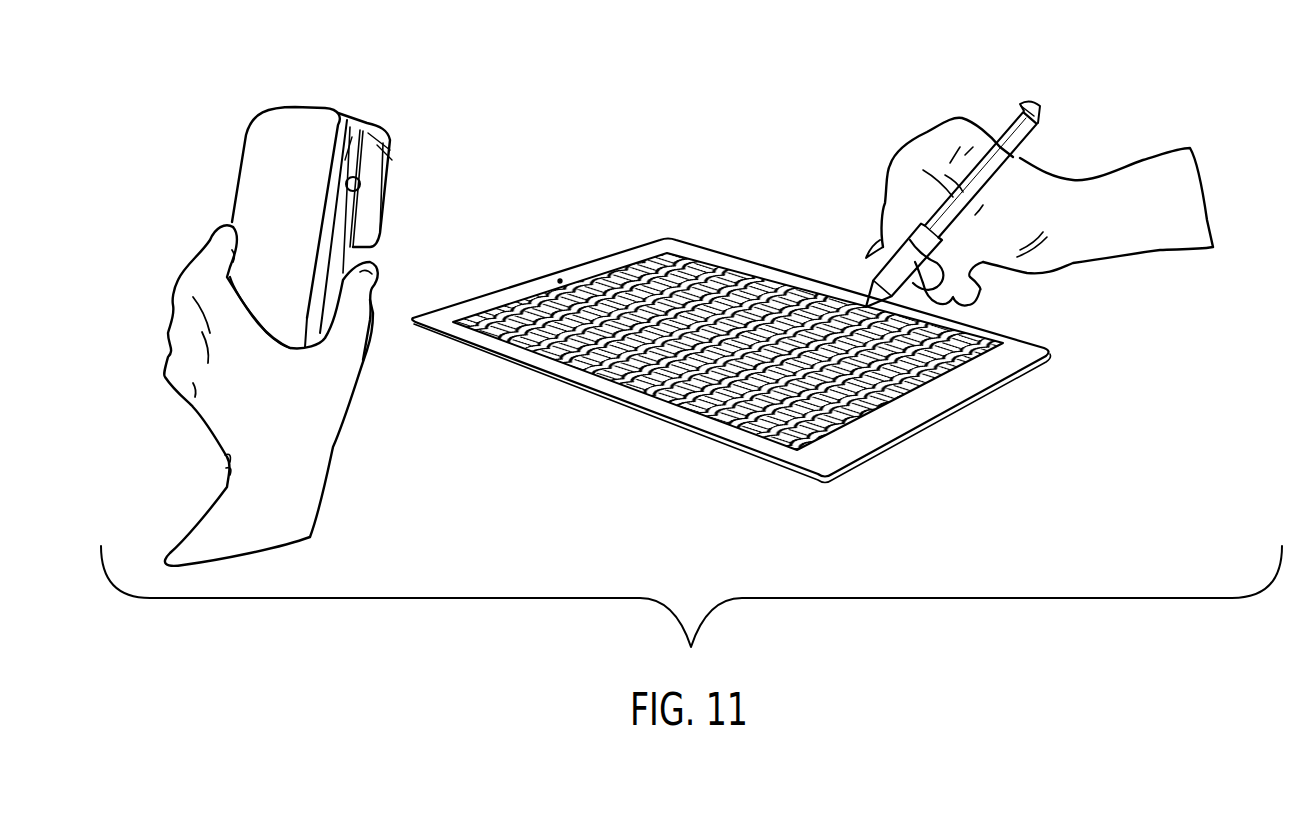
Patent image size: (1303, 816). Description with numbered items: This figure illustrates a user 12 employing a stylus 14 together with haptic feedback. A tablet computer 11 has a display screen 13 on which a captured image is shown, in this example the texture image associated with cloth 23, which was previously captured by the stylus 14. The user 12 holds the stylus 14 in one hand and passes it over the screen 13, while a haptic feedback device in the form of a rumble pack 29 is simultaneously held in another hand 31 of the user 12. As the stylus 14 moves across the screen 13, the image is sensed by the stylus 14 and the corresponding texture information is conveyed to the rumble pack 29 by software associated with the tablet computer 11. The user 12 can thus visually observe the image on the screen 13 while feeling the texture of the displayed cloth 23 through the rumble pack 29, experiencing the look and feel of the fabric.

The tablet computer 11 is at (1018, 357).
The user 12 is at (1127, 180).
The display screen 13 is at (698, 262).
The stylus 14 is at (1007, 133).
The cloth 23 is at (768, 307).
The rumble pack 29 is at (295, 122).
The another hand 31 is at (312, 463).